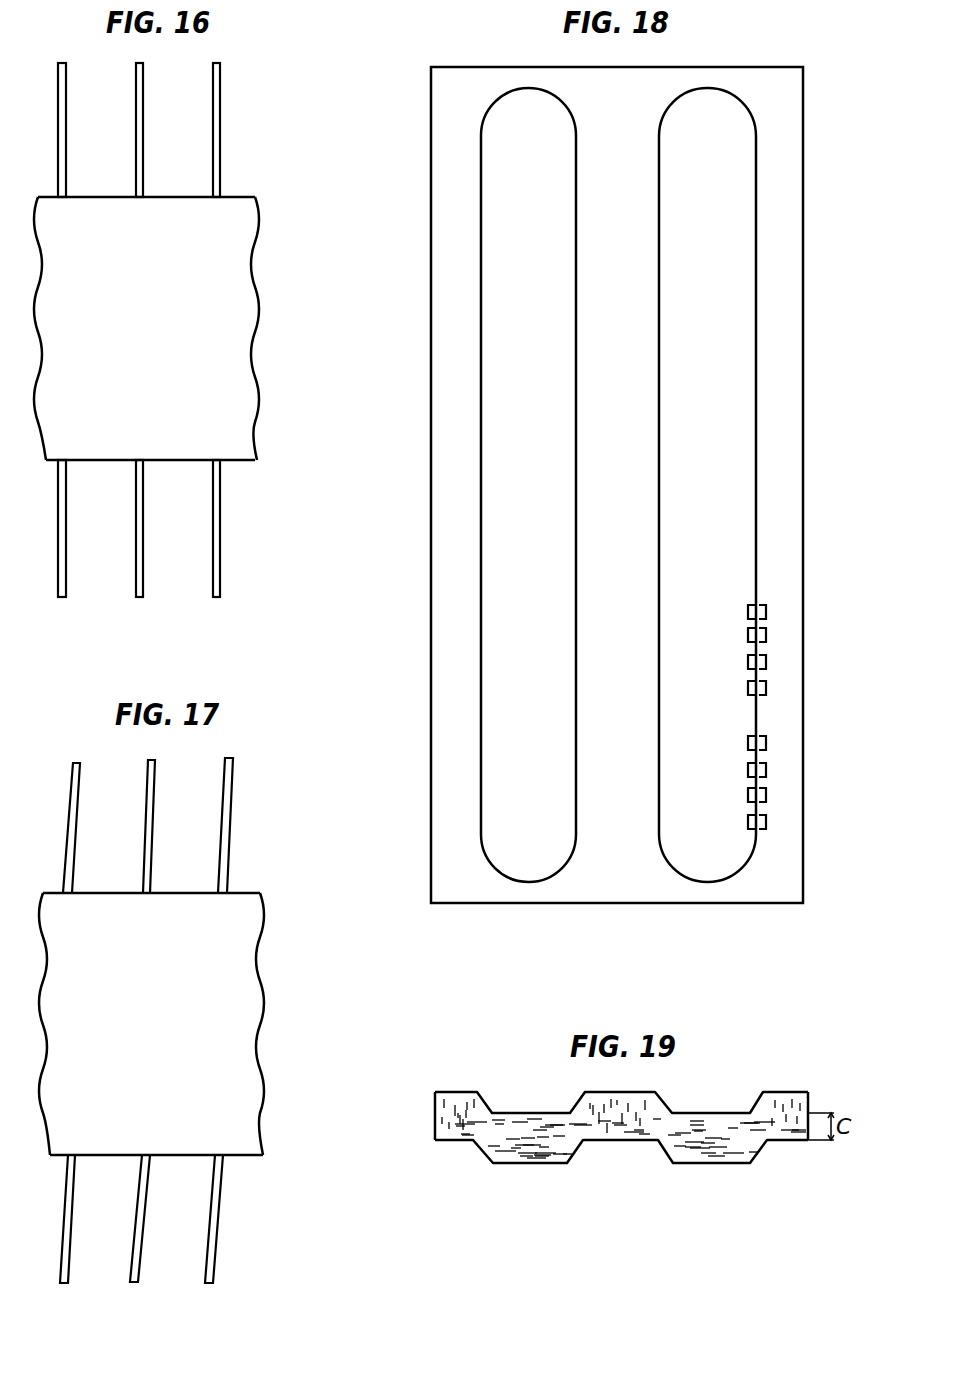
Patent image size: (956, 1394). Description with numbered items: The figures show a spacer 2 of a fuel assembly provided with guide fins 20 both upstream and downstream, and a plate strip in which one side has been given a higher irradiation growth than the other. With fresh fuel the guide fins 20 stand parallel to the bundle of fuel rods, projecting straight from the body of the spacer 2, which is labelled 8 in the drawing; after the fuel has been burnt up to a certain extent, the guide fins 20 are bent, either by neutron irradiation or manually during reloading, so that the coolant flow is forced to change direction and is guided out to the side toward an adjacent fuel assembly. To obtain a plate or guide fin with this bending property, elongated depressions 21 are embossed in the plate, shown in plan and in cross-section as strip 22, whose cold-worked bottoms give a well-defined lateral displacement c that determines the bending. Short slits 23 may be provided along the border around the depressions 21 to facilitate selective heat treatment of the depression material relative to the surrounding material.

In FIG. 16, the spacer 2 is at (171, 328).
In FIG. 17, the spacer 2 is at (181, 1024).
In FIG. 16, the body / housing 8 is at (237, 274).
In FIG. 17, the body / housing 8 is at (248, 957).
In FIG. 16, the guide fins 20 is at (220, 118).
In FIG. 17, the guide fins 20 is at (229, 798).
In FIG. 18, the elongated depressions 21 is at (515, 391).
In FIG. 19, the elongated depressions 21 is at (718, 1098).
In FIG. 19, the corrugated strip 22 is at (621, 1131).
In FIG. 18, the short slits 23 is at (764, 658).